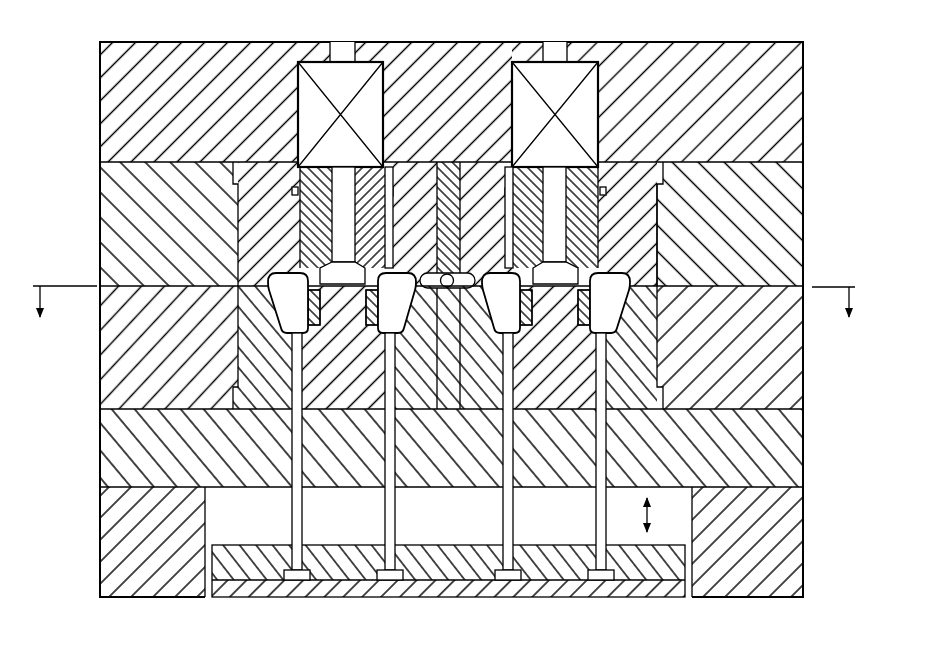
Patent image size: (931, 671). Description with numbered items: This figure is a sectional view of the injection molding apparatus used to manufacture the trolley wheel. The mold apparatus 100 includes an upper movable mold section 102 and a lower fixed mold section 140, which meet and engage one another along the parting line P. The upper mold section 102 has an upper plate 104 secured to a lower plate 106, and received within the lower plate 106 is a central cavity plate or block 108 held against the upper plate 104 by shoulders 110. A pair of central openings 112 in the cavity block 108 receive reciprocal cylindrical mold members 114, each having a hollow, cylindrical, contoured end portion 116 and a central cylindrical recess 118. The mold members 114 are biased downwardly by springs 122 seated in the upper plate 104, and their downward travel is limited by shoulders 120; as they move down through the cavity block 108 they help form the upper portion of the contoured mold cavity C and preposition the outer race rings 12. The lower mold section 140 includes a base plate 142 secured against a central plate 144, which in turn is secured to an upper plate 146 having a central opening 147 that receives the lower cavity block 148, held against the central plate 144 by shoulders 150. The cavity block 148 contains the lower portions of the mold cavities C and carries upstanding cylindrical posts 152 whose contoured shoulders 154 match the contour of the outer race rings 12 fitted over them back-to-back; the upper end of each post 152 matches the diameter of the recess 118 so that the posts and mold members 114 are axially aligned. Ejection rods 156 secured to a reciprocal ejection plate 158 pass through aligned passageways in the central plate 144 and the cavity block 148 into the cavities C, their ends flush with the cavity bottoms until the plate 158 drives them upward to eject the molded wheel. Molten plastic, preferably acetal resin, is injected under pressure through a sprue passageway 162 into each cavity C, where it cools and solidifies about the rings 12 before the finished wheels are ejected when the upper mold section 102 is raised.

The mold apparatus 100 is at (448, 330).
The upper movable mold section 102 is at (446, 225).
The upper plate 104 is at (787, 103).
The lower plate 106 is at (452, 285).
The central cavity plate or block 108 is at (657, 229).
The shoulders 110 is at (233, 188).
The central openings 112 is at (373, 251).
The reciprocal cylindrical mold members 114 is at (382, 231).
The contoured end portion 116 is at (312, 266).
The central cylindrical recess 118 is at (613, 252).
The shoulders 120 is at (294, 190).
The springs 122 is at (520, 112).
The lower fixed mold section 140 is at (448, 435).
The base plate 142 is at (790, 524).
The central plate 144 is at (785, 442).
The upper plate 146 is at (480, 341).
The central opening 147 is at (246, 331).
The lower cavity block 148 is at (250, 358).
The shoulders 150 is at (237, 387).
The upstanding cylindrical posts 152 is at (356, 324).
The contoured shoulders 154 is at (449, 371).
The ejection rods 156 is at (386, 434).
The reciprocal ejection plate 158 is at (547, 557).
The sprue passageway 162 is at (441, 289).
The outer race rings 12 is at (387, 302).
The mold cavity C is at (449, 303).
The parting line P is at (97, 285).